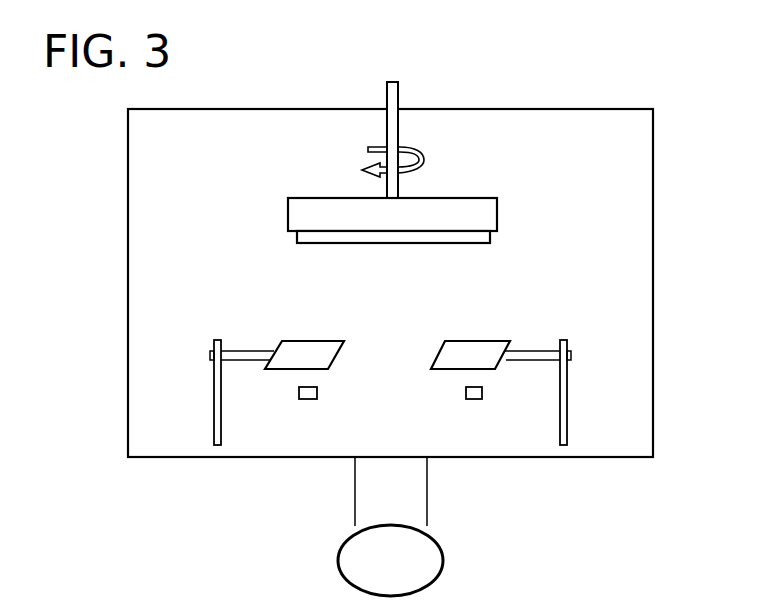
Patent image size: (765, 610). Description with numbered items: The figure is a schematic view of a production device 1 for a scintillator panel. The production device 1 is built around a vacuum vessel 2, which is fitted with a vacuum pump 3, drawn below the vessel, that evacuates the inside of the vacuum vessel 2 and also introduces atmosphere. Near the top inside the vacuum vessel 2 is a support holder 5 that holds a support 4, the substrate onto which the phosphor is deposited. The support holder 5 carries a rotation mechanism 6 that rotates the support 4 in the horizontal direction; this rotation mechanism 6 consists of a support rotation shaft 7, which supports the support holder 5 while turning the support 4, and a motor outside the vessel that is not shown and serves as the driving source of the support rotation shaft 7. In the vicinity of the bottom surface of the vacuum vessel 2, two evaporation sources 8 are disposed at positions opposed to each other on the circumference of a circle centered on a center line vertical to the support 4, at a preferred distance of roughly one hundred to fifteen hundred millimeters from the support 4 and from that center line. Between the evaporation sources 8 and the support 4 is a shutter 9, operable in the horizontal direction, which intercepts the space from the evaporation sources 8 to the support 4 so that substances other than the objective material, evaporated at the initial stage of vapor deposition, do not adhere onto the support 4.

The production device 1 is at (441, 98).
The vacuum vessel 2 is at (654, 133).
The vacuum pump 3 is at (443, 556).
The support 4 is at (490, 236).
The support holder 5 is at (480, 197).
The rotation mechanism 6 is at (414, 178).
The support rotation shaft 7 is at (390, 124).
The evaporation sources 8 is at (466, 399).
The shutter 9 is at (491, 342).